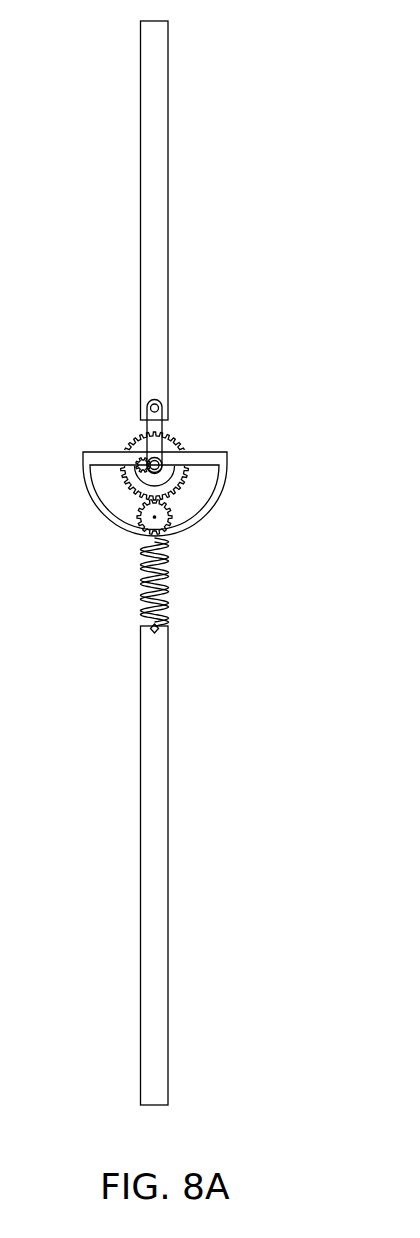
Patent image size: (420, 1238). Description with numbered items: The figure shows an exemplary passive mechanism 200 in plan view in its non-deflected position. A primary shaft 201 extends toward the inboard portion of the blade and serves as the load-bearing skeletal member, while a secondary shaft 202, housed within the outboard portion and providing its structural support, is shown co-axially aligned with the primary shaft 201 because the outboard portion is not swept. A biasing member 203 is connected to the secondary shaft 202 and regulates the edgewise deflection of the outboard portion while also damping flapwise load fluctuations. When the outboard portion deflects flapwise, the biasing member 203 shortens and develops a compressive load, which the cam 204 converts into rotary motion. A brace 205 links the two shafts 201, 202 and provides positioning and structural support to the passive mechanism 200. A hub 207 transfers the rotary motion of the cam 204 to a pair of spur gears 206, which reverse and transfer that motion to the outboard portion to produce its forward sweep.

The passive mechanism 200 is at (245, 72).
The primary shaft 201 is at (162, 245).
The secondary shaft 202 is at (162, 815).
The biasing member 203 is at (167, 603).
The cam 204 is at (227, 467).
The brace 205 is at (162, 425).
The spur gears 206 is at (131, 491).
The hub 207 is at (140, 463).